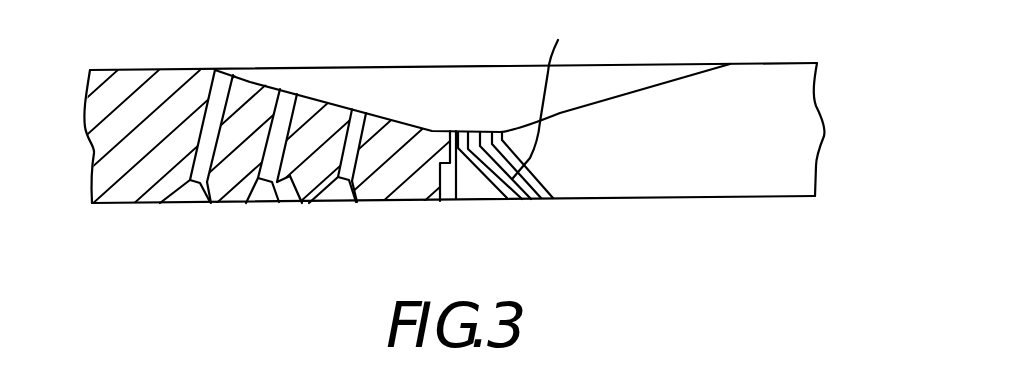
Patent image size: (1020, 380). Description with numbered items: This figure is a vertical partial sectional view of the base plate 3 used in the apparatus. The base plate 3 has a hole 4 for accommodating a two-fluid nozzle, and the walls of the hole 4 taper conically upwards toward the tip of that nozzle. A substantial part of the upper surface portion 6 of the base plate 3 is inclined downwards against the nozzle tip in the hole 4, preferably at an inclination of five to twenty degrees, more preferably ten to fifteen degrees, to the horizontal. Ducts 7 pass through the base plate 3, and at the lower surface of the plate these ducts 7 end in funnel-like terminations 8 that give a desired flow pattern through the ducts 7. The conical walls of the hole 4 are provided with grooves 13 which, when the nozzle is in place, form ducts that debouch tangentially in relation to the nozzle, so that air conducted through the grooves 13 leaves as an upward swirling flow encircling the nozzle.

The base plate 3 is at (137, 82).
The hole 4 is at (471, 180).
The portion of the upper surface 6 is at (325, 102).
The ducts 7 is at (290, 176).
The funnel-like terminations 8 is at (188, 196).
The grooves 13 is at (488, 172).